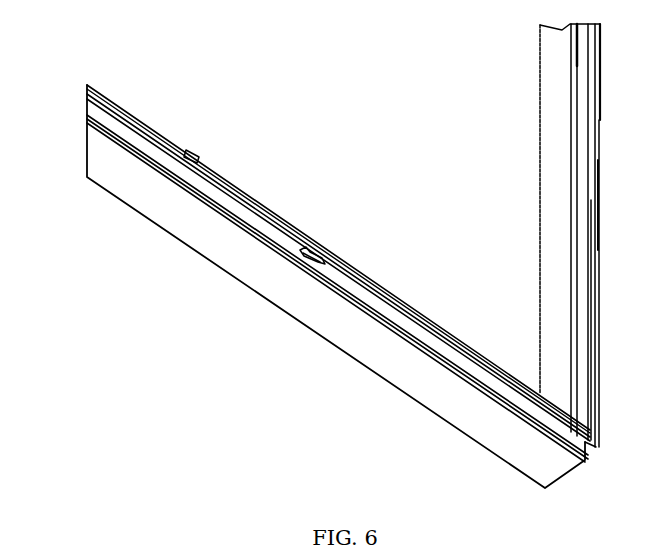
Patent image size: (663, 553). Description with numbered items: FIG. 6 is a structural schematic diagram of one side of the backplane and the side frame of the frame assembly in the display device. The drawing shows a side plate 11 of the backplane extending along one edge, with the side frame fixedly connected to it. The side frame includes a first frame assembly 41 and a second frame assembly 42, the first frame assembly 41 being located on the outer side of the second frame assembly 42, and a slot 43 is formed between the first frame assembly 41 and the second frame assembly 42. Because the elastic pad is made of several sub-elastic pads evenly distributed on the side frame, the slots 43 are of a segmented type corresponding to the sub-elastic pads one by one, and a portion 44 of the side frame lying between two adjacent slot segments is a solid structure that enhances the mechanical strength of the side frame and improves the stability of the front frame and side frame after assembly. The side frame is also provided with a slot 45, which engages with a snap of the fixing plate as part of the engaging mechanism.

The side plate 11 is at (363, 333).
The first frame assembly 41 is at (143, 122).
The second frame assembly 42 is at (199, 157).
The slot 43 is at (105, 98).
The portion of the side frame 44 is at (257, 208).
The slot 45 is at (318, 252).